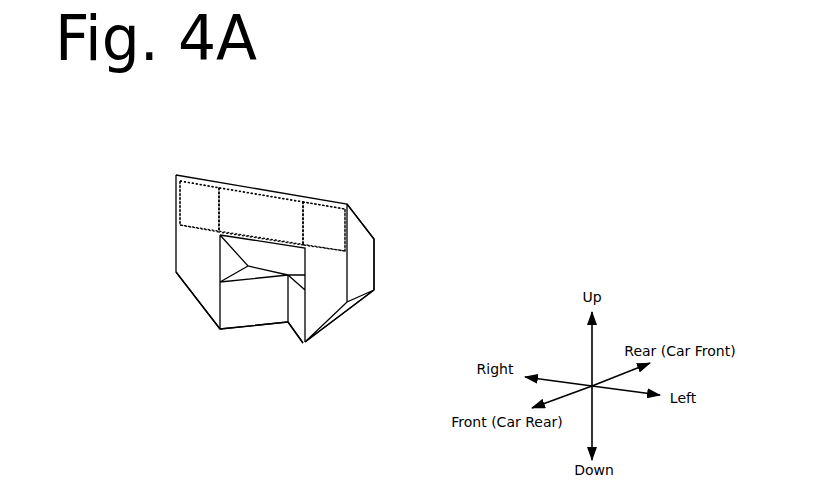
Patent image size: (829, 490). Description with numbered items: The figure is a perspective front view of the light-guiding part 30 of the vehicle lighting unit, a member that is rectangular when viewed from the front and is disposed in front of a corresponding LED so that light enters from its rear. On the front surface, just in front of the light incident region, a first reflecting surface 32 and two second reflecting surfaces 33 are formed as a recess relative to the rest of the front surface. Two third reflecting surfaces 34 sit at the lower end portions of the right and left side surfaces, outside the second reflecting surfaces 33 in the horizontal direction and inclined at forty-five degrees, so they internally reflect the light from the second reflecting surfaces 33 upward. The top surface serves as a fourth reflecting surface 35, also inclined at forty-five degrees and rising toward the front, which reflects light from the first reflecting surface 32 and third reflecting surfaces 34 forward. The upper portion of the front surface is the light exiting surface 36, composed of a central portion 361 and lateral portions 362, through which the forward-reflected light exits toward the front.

The light-guiding part 30 is at (271, 241).
The first reflecting surface 32 is at (258, 251).
The second reflecting surfaces 33 is at (297, 320).
The third reflecting surfaces 34 is at (362, 355).
The fourth reflecting surface 35 is at (365, 225).
The light exiting surface 36 is at (267, 166).
The central portion 361 is at (262, 203).
The lateral portions 362 is at (357, 117).